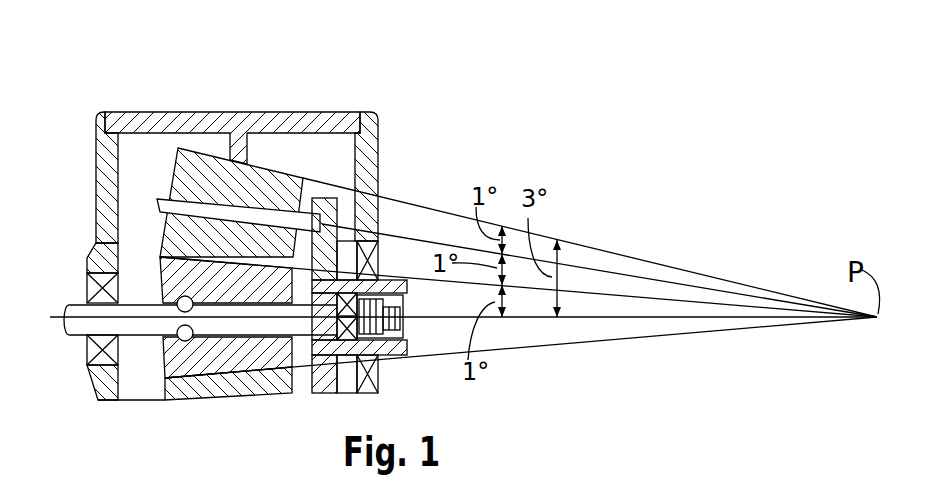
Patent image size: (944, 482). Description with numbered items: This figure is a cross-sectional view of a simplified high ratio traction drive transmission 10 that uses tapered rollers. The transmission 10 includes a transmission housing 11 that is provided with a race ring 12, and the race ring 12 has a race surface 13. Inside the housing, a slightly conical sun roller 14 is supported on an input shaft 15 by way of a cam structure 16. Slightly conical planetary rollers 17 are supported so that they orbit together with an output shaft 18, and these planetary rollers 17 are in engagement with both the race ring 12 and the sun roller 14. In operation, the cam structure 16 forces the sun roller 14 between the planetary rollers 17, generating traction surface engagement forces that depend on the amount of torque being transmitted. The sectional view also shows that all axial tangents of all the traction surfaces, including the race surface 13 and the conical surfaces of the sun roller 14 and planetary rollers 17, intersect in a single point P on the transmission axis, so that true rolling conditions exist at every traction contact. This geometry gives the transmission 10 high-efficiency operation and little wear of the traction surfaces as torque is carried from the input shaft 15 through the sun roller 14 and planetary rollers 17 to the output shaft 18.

The traction drive transmission 10 is at (110, 66).
The transmission housing 11 is at (272, 112).
The race ring 12 is at (227, 162).
The race surface 13 is at (250, 172).
The sun roller 14 is at (160, 268).
The input shaft 15 is at (74, 303).
The cam structure 16 is at (190, 296).
The planetary rollers 17 is at (178, 158).
The output shaft 18 is at (403, 286).